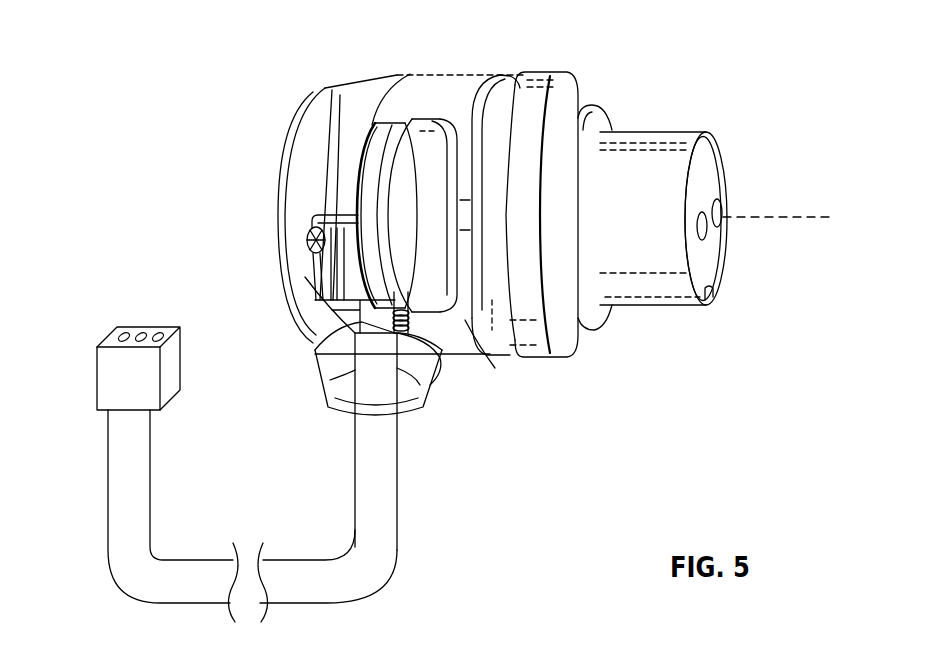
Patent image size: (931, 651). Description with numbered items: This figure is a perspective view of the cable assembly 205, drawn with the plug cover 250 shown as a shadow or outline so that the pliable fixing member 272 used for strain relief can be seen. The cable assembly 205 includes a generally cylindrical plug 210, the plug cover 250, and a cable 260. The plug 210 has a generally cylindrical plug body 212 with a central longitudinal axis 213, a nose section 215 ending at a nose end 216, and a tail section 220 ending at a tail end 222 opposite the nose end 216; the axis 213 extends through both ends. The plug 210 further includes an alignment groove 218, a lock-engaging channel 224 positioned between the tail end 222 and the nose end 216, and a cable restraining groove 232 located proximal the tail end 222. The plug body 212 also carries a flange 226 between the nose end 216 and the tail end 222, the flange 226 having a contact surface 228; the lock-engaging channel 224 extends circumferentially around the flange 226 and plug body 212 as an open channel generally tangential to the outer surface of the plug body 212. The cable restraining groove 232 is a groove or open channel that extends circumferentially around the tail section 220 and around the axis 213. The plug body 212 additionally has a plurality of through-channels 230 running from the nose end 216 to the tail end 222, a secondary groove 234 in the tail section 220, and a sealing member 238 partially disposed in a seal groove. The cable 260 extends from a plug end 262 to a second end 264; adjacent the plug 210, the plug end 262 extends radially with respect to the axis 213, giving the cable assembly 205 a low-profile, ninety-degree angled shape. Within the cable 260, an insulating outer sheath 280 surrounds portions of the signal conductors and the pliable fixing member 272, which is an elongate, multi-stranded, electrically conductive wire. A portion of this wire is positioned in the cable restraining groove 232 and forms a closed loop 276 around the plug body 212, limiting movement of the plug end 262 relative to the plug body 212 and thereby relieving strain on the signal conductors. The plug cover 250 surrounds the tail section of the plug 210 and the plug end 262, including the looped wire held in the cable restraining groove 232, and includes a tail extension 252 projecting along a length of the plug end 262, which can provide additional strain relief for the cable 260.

The cable assembly 205 is at (176, 36).
The plug 210 is at (786, 284).
The plug body 212 is at (687, 137).
The longitudinal axis 213 is at (813, 217).
The nose section 215 is at (627, 138).
The nose end 216 is at (683, 163).
The alignment groove 218 is at (713, 293).
The tail section 220 is at (413, 100).
The tail end 222 is at (367, 100).
The lock-engaging channel 224 is at (500, 92).
The flange 226 is at (543, 82).
The contact surface 228 is at (563, 345).
The through-channels 230 is at (713, 210).
The cable restraining groove 232 is at (393, 217).
The secondary groove 234 is at (490, 355).
The sealing member 238 is at (587, 316).
The plug cover 250 is at (297, 206).
The tail extension 252 is at (328, 377).
The cable 260 is at (362, 576).
The plug end 262 is at (328, 397).
The second end 264 is at (118, 425).
The pliable fixing member 272 is at (425, 362).
The closed loop 276 is at (380, 203).
The outer sheath 280 is at (355, 468).